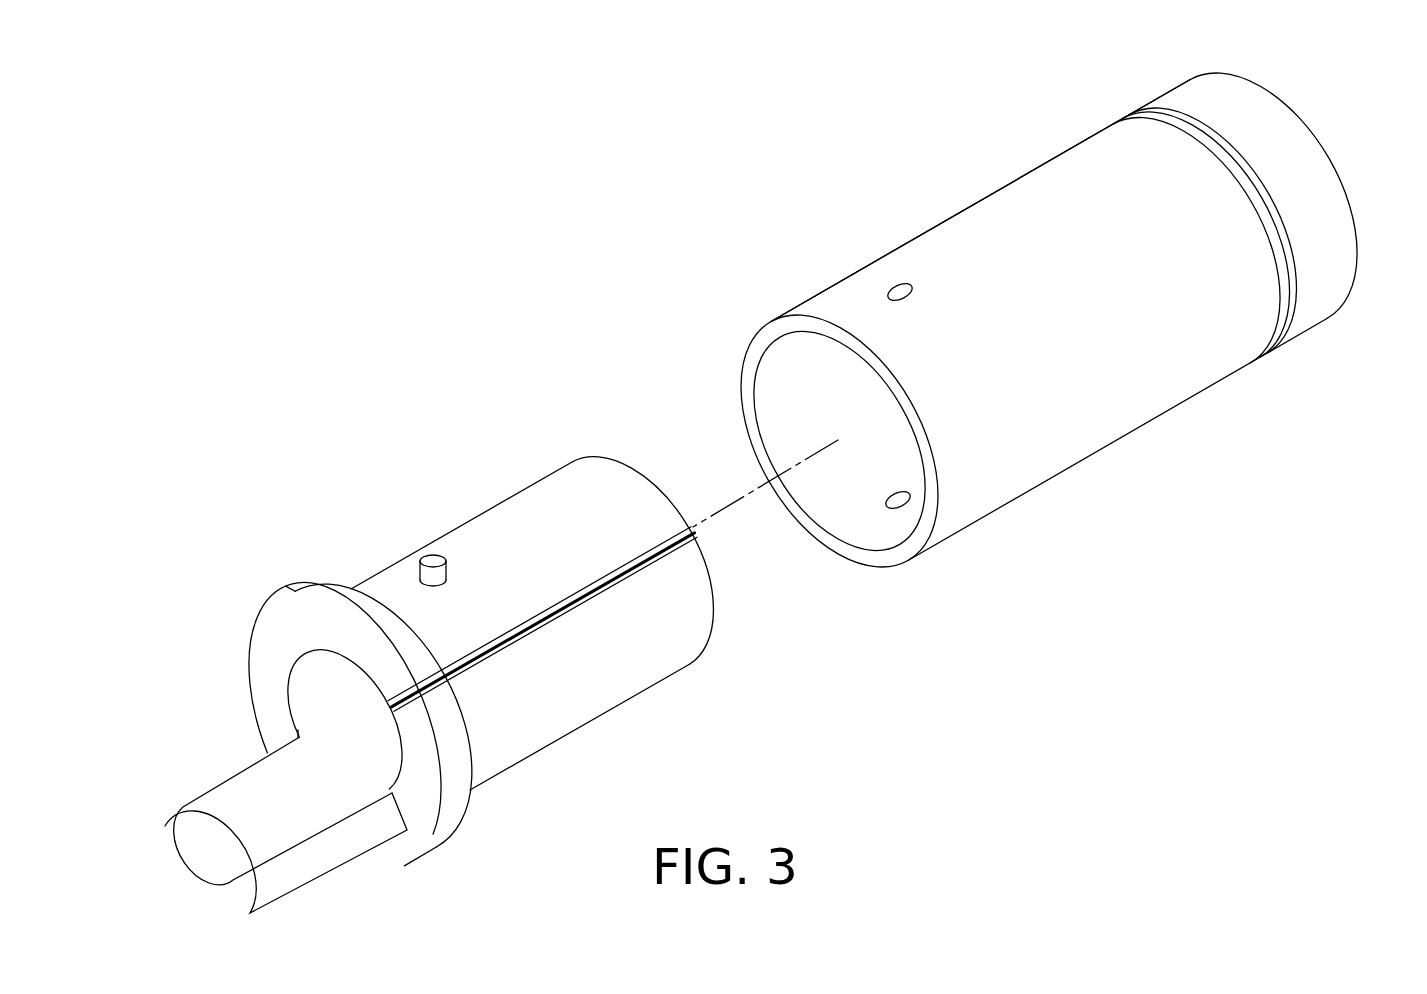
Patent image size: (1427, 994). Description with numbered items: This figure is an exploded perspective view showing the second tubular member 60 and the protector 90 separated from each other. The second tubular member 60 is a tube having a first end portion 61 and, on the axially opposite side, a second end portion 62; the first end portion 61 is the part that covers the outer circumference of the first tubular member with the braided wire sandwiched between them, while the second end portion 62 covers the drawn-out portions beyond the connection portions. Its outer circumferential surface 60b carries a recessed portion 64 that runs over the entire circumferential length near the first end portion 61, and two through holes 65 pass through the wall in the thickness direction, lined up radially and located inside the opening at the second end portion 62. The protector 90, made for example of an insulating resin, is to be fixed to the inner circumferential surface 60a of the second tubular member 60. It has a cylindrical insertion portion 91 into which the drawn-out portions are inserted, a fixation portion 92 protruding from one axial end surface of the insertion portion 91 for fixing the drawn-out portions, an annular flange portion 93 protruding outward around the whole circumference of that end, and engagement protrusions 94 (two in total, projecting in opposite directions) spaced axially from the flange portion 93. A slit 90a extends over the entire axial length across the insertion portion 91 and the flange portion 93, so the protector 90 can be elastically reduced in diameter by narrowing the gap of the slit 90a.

The second tubular member 60 is at (921, 152).
The inner circumferential surface 60a is at (780, 378).
The outer circumferential surface 60b is at (838, 300).
The first end portion 61 is at (1321, 316).
The second end portion 62 is at (950, 522).
The recessed portion 64 is at (1185, 132).
The through holes 65 is at (901, 284).
The protector 90 is at (456, 452).
The slit 90a is at (655, 575).
The insertion portion 91 is at (545, 495).
The fixation portion 92 is at (190, 822).
The flange portion 93 is at (330, 590).
The engagement protrusions 94 is at (432, 555).